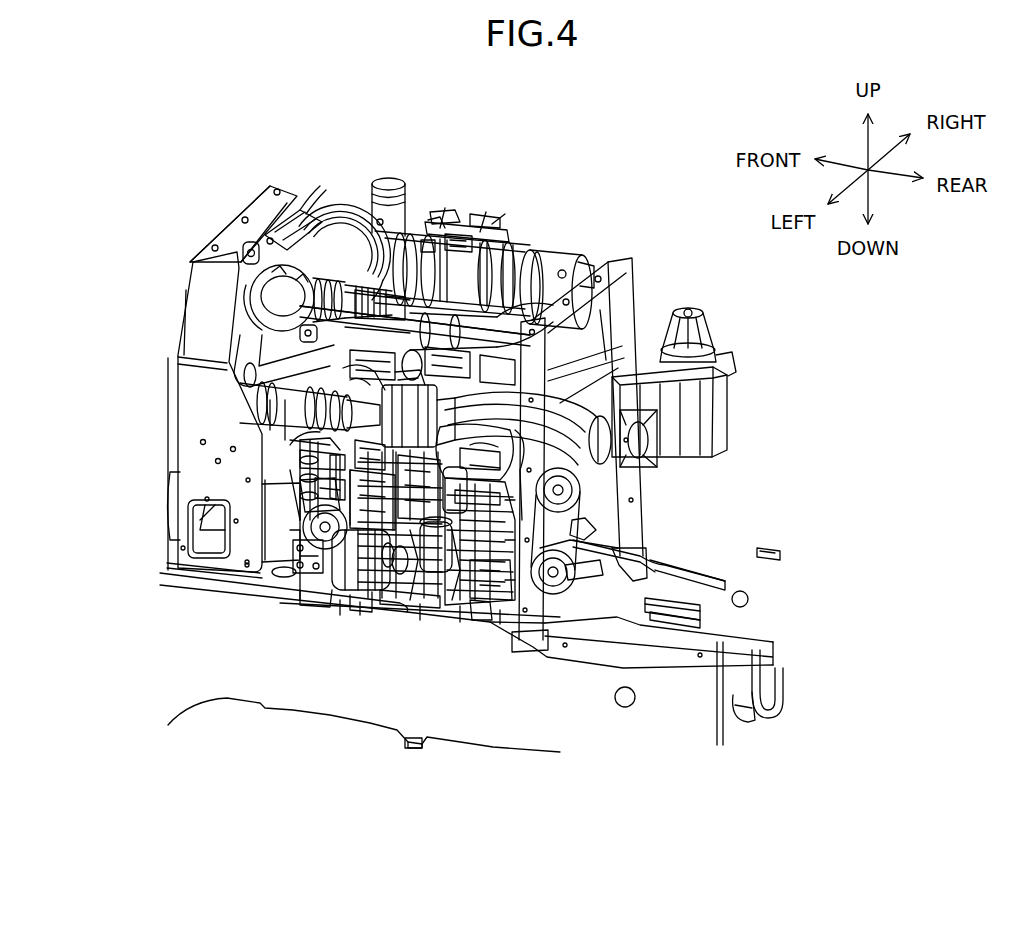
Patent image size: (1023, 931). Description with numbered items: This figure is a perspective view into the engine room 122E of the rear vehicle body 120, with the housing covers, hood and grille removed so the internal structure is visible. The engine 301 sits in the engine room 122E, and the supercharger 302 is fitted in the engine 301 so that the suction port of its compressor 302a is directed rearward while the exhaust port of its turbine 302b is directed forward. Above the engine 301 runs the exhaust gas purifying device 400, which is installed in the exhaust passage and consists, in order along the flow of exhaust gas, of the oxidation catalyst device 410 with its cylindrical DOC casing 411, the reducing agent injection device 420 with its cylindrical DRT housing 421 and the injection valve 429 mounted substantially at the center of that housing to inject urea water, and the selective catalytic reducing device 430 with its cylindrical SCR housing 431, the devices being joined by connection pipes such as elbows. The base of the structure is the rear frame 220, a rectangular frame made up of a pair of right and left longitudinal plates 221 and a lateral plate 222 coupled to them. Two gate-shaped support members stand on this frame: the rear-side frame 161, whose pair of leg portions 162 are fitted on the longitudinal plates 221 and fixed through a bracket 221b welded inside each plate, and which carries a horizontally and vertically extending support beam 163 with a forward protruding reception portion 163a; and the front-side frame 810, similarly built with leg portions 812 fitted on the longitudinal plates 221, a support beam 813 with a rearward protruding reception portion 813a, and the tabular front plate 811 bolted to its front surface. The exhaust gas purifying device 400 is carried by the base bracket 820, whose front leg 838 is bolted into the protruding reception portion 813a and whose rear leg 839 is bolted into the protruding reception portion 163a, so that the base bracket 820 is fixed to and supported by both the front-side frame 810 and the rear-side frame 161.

The rear vehicle body 120 is at (693, 805).
The engine room 122E is at (697, 143).
The rear-side frame 161 is at (643, 302).
The leg portions 162 is at (646, 496).
The support beam 163 is at (600, 520).
The protruding reception portion 163a is at (567, 520).
The rear frame 220 is at (333, 706).
The longitudinal plates 221 is at (293, 675).
The bracket 221b is at (647, 549).
The lateral plate 222 is at (752, 738).
The engine 301 is at (479, 618).
The supercharger 302 is at (320, 540).
The compressor 302a is at (415, 600).
The turbine 302b is at (323, 487).
The exhaust gas purifying device 400 is at (553, 200).
The oxidation catalyst device 410 is at (340, 200).
The DOC casing 411 is at (312, 215).
The reducing agent injection device 420 is at (470, 245).
The DRT housing 421 is at (428, 252).
The injection valve 429 is at (403, 240).
The selective catalytic reducing device 430 is at (563, 250).
The SCR housing 431 is at (588, 264).
The front-side frame 810 is at (192, 259).
The front plate 811 is at (232, 372).
The leg portions 812 is at (270, 467).
The support beam 813 is at (180, 269).
The protruding reception portion 813a is at (232, 352).
The base bracket 820 is at (706, 340).
The front leg 838 is at (258, 333).
The rear leg 839 is at (686, 412).